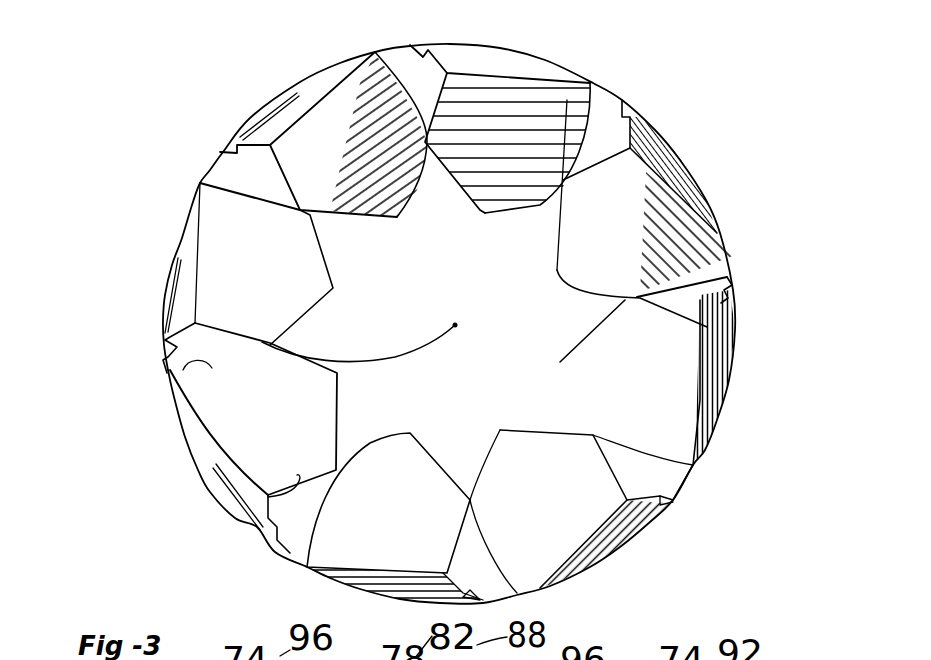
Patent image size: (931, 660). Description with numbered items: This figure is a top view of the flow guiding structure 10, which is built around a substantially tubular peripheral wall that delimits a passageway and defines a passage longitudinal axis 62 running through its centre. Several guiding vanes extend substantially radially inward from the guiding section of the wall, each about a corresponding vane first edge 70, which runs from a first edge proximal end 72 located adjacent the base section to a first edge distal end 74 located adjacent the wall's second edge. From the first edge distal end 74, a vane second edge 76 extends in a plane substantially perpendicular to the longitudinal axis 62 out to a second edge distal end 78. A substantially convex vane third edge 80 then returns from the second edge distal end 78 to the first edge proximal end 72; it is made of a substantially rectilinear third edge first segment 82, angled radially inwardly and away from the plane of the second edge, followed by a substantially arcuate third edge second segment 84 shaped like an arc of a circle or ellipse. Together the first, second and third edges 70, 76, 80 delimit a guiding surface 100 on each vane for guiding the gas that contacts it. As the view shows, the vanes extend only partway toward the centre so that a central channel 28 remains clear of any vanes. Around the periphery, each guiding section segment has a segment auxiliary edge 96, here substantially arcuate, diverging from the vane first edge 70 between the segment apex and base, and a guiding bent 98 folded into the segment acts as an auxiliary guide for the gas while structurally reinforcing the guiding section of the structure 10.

The guiding structure 10 is at (172, 162).
The central channel 28 is at (358, 262).
The passage longitudinal axis 62 is at (195, 323).
The vane first edge 70 is at (217, 457).
The first edge proximal end 72 is at (696, 468).
The first edge distal end 74 is at (704, 325).
The vane second edge 76 is at (268, 518).
The second edge distal end 78 is at (631, 299).
The vane third edge 80 is at (521, 341).
The third edge first segment 82 is at (593, 435).
The third edge second segment 84 is at (268, 342).
The segment auxiliary edge 96 is at (293, 560).
The guiding bent 98 is at (728, 290).
The guiding surface 100 is at (545, 130).